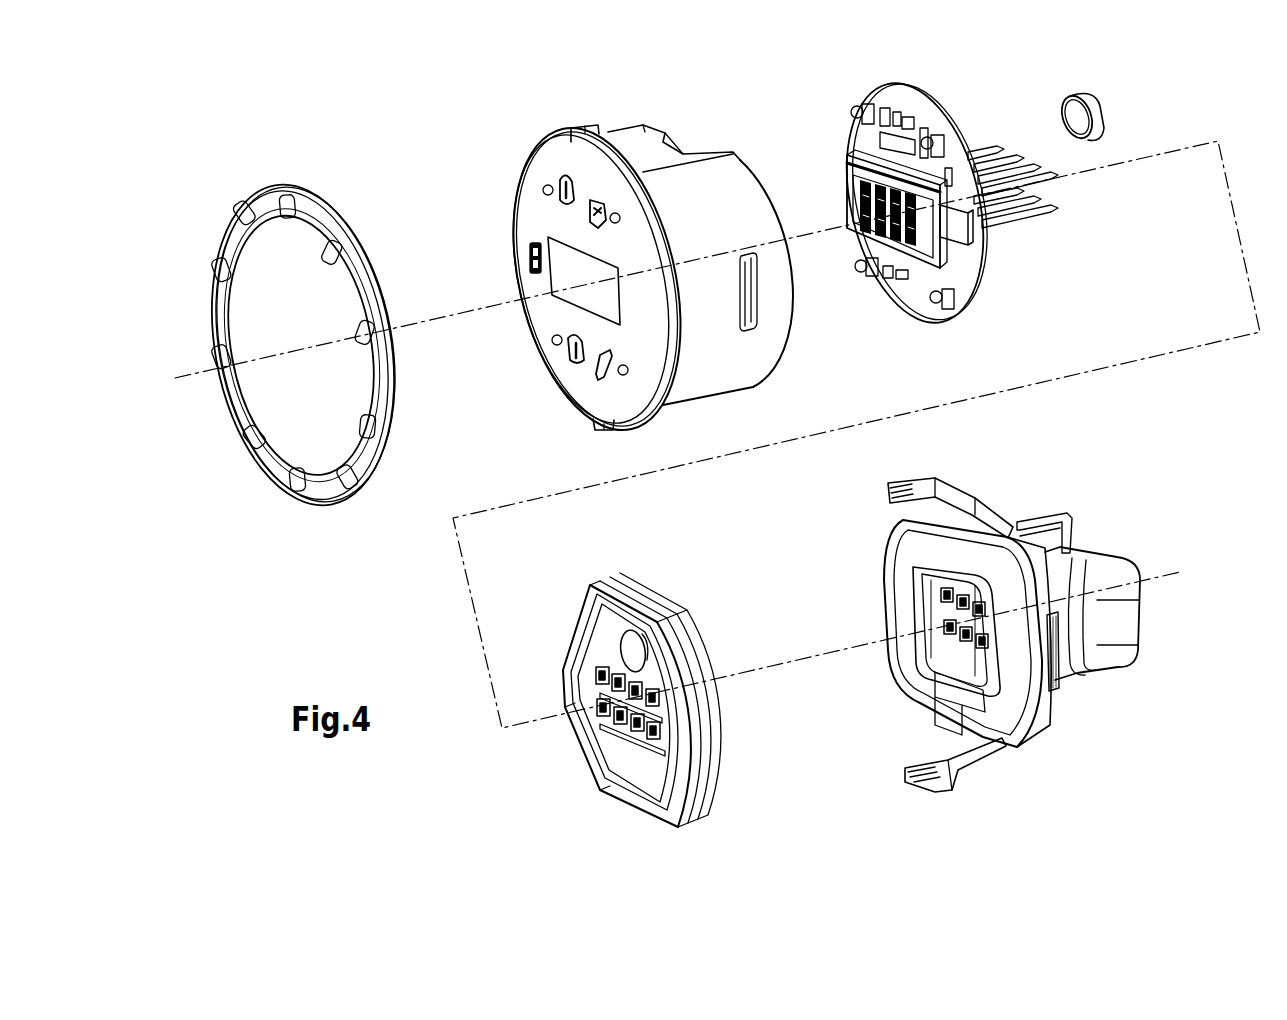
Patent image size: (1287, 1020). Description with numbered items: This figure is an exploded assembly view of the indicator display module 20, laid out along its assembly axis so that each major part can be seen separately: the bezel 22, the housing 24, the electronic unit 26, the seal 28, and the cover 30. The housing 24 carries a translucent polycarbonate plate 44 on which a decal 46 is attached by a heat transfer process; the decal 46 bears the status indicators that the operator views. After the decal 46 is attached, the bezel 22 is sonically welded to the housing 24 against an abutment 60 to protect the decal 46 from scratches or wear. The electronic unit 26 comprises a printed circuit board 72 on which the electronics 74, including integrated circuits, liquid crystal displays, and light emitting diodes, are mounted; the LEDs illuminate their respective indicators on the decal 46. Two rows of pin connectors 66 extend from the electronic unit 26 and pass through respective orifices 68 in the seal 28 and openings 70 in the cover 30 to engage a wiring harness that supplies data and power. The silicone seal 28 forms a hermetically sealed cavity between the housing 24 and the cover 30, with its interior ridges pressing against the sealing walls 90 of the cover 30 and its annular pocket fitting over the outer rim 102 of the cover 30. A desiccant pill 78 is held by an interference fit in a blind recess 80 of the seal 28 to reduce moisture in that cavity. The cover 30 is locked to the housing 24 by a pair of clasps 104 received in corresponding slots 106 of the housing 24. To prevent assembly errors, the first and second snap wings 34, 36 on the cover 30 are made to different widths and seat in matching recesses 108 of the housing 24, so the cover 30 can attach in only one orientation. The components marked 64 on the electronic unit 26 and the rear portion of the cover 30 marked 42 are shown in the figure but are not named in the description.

The indicator display module 20 is at (478, 100).
The bezel 22 is at (307, 190).
The housing 24 is at (651, 267).
The electronic unit 26 is at (960, 214).
The seal 28 is at (617, 674).
The cover 30 is at (1001, 623).
The first snap wing 34 is at (941, 484).
The second snap wing 36 is at (975, 780).
The rear connector body 42 is at (1112, 668).
The translucent plate 44 is at (573, 128).
The decal 46 is at (536, 215).
The abutment 60 is at (604, 432).
The light emitting diodes 64 is at (856, 112).
The pin connectors 66 is at (1048, 180).
The orifices 68 is at (604, 716).
The openings 70 is at (941, 638).
The printed circuit board 72 is at (975, 300).
The electronics 74 is at (922, 122).
The desiccant pill 78 is at (1093, 110).
The blind recess 80 is at (631, 650).
The sealing walls 90 is at (922, 620).
The outer rim 102 is at (905, 560).
The clasps 104 is at (1062, 682).
The slots 106 is at (757, 325).
The recesses 108 is at (712, 150).